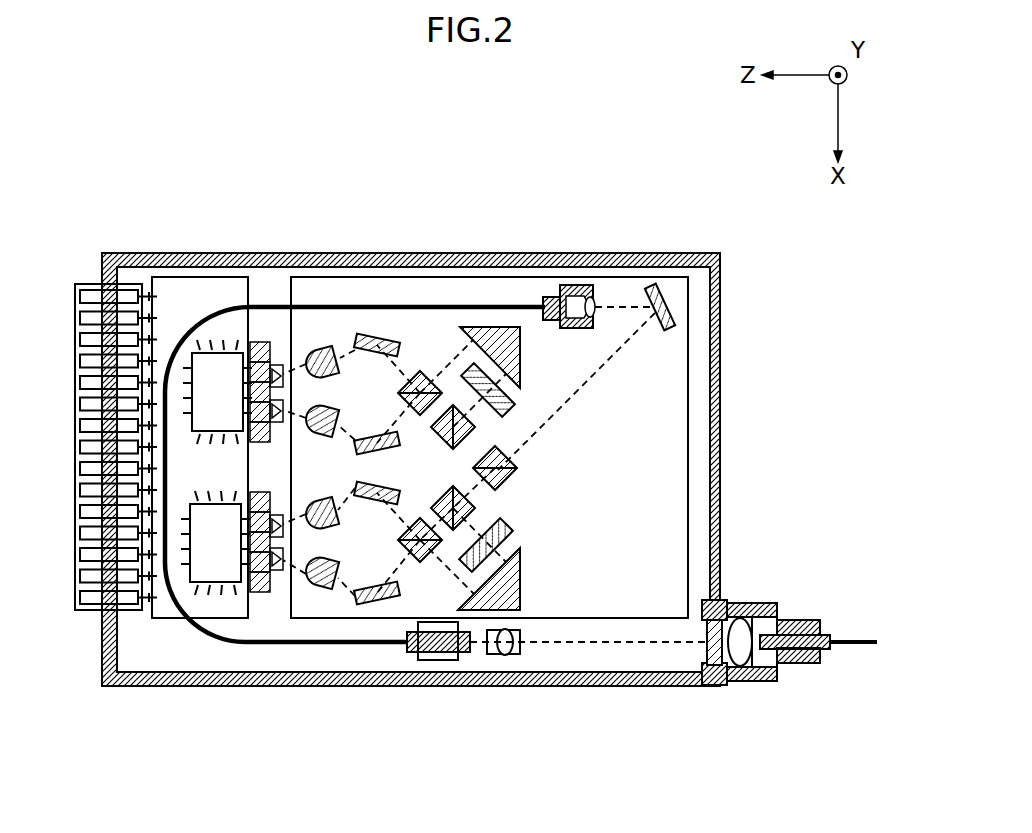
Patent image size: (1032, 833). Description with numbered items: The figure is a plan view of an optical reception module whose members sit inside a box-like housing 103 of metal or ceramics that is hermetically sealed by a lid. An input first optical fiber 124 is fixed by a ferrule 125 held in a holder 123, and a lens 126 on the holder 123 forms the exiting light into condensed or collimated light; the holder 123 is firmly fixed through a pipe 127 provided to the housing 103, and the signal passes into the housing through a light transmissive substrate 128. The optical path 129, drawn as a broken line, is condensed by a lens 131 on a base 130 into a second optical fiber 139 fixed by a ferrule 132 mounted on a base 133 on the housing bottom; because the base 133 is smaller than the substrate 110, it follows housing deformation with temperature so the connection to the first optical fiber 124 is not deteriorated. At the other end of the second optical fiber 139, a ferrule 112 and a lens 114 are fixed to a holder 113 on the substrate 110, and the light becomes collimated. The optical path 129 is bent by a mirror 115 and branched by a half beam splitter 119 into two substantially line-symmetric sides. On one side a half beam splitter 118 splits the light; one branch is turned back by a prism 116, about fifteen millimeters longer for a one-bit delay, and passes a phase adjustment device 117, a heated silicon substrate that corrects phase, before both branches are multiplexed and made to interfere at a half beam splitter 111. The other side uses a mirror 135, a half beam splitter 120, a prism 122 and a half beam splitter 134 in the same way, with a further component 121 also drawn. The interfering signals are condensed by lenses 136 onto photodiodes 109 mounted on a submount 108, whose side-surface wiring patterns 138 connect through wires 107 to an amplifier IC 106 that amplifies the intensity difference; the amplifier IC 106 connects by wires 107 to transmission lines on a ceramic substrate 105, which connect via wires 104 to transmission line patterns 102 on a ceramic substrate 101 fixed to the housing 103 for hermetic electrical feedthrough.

The ceramic substrate 101 is at (106, 618).
The transmission line patterns 102 is at (90, 297).
The housing 103 is at (135, 253).
The wires 104 is at (150, 330).
The ceramic substrate 105 is at (173, 293).
The amplifier IC 106 is at (228, 350).
The wires 107 is at (257, 342).
The submount 108 is at (273, 365).
The wiring patterns 138 is at (291, 335).
The photodiodes 109 is at (357, 338).
The mirror 135 is at (365, 600).
The lenses 136 is at (338, 352).
The half beam splitter 111 is at (424, 372).
The substrate 110 is at (473, 293).
The ferrule 112 is at (543, 305).
The holder 113 is at (577, 285).
The lens 114 is at (597, 298).
The mirror 115 is at (667, 287).
The prism 116 is at (522, 368).
The phase adjustment device 117 is at (510, 410).
The half beam splitter 118 is at (476, 432).
The half beam splitter 119 is at (517, 472).
The half beam splitter 120 is at (476, 512).
The filter plate 121 is at (512, 532).
The prism 122 is at (521, 593).
The half beam splitter 134 is at (421, 558).
The second optical fiber 139 is at (190, 632).
The base 133 is at (437, 661).
The ferrule 132 is at (462, 655).
The lens 131 is at (505, 656).
The base 130 is at (512, 654).
The optical path 129 is at (652, 645).
The holder 123 is at (724, 600).
The pipe 127 is at (713, 688).
The light transmissive substrate 128 is at (706, 648).
The lens 126 is at (743, 672).
The ferrule 125 is at (790, 620).
The first optical fiber 124 is at (850, 636).